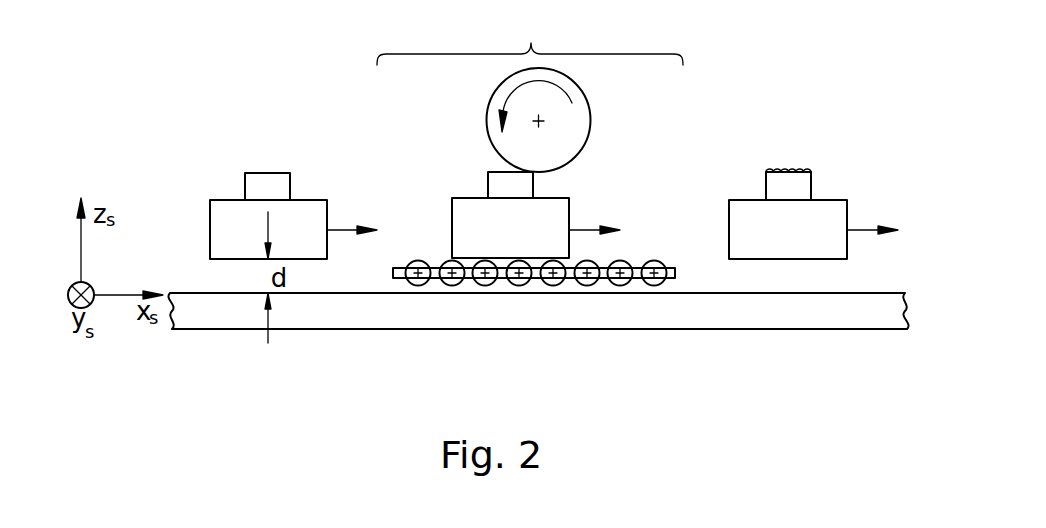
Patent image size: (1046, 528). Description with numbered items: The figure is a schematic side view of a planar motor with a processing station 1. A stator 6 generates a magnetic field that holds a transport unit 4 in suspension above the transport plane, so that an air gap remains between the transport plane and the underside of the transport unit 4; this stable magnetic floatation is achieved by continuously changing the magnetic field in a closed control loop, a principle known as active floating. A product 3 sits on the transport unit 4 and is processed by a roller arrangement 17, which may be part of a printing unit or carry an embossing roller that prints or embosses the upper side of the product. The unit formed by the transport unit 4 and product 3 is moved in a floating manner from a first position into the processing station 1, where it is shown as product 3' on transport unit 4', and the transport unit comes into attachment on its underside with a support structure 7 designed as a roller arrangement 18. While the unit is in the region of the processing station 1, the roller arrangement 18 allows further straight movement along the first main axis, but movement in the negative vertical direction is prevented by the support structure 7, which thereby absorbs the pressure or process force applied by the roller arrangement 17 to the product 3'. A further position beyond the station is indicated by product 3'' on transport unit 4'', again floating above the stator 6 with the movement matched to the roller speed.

The processing station 1 is at (530, 37).
The product 3 is at (271, 144).
The transport unit 4 is at (273, 193).
The product 3' is at (479, 140).
The transport unit 4' is at (496, 188).
The roller arrangement 17 is at (562, 132).
The roller arrangement 18 is at (623, 258).
The support structure 7 is at (503, 272).
The stator 6 is at (323, 300).
The product 3'' is at (794, 142).
The transport unit 4'' is at (818, 189).